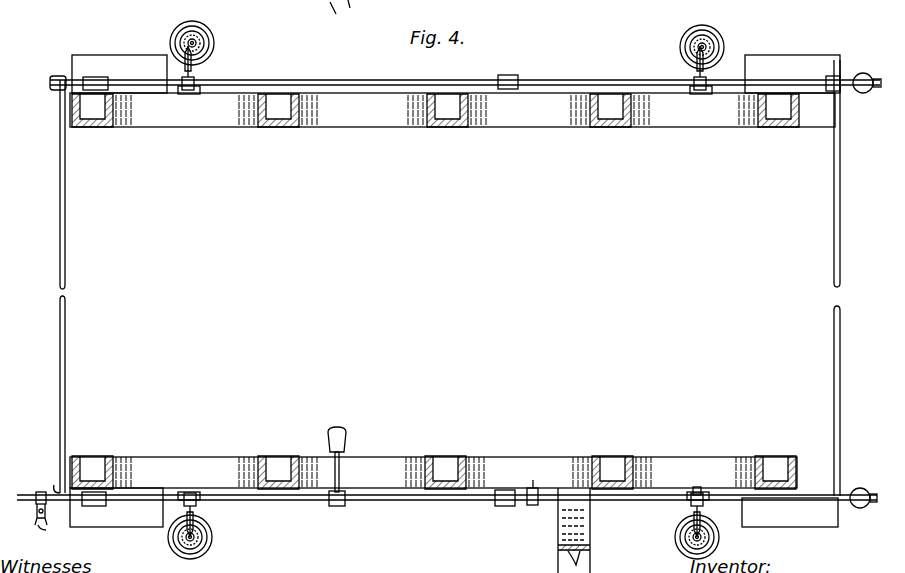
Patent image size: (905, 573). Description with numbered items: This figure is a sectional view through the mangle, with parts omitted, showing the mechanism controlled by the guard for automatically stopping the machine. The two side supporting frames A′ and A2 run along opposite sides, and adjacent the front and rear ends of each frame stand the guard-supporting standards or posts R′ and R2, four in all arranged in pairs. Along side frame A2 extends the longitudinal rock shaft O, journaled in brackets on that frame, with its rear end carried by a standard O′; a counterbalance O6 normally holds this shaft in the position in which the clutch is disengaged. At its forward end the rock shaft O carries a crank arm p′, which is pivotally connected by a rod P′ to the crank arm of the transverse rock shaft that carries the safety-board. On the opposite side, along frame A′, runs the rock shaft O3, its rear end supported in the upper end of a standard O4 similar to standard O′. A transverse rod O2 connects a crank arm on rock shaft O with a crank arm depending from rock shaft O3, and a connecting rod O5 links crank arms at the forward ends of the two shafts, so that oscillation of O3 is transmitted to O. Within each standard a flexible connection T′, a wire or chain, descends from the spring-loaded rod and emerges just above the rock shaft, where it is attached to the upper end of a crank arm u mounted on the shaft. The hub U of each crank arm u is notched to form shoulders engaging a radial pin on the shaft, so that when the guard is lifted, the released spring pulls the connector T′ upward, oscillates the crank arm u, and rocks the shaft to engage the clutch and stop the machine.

The side supporting frame A′ is at (372, 118).
The side supporting frame A2 is at (572, 462).
The rock shaft O is at (414, 502).
The standard O′ is at (92, 490).
The rod O2 is at (798, 515).
The rock shaft O3 is at (836, 50).
The standard O4 is at (57, 76).
The connecting rod O5 is at (66, 252).
The counterbalance O6 is at (340, 432).
The standard or post R′ is at (208, 38).
The standard or post R2 is at (660, 540).
The flexible connection T′ is at (200, 72).
The hub U is at (187, 96).
The crank arm u is at (698, 488).
The crank arm p′ is at (40, 490).
The rod P′ is at (42, 527).